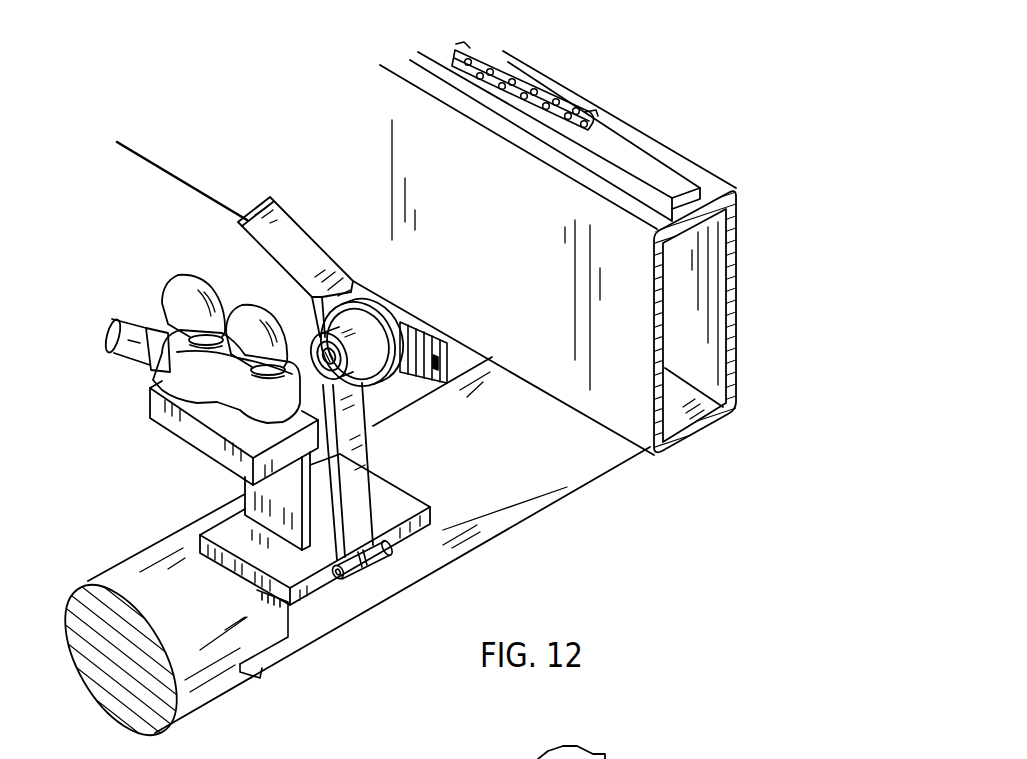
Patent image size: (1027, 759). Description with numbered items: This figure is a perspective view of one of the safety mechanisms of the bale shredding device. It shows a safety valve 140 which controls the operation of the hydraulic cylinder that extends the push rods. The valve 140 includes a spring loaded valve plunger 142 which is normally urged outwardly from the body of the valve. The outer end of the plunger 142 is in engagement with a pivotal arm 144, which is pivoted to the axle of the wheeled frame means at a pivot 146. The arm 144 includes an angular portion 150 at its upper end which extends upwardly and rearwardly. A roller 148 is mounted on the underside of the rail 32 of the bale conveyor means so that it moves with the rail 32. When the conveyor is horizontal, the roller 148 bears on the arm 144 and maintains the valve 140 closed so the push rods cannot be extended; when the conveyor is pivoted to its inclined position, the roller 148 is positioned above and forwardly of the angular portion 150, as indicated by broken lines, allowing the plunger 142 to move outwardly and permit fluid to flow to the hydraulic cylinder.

The rail 32 is at (225, 154).
The safety valve 140 is at (200, 373).
The spring loaded valve plunger 142 is at (313, 472).
The pivotal arm 144 is at (368, 427).
The pivot 146 is at (342, 580).
The roller 148 is at (403, 360).
The angular portion 150 is at (296, 239).